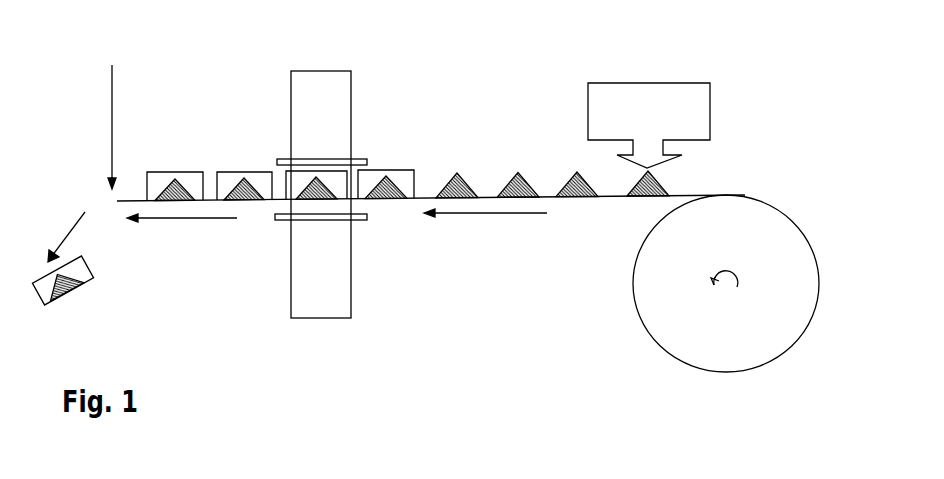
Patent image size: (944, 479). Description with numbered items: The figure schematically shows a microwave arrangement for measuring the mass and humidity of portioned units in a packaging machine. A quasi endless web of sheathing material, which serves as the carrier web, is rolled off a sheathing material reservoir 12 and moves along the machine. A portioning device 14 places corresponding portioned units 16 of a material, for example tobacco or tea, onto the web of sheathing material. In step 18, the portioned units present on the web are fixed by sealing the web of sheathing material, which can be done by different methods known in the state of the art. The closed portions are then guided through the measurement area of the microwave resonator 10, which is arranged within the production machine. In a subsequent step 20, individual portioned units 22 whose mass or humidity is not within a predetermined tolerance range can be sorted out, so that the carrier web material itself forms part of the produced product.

The microwave resonator 10 is at (308, 85).
The sheathing material reservoir 12 is at (693, 335).
The portioning device 14 is at (658, 115).
The portioned units 16 is at (660, 183).
The sealing step 18 is at (400, 178).
The sorting step 20 is at (118, 170).
The individual portioned unit 22 is at (68, 298).